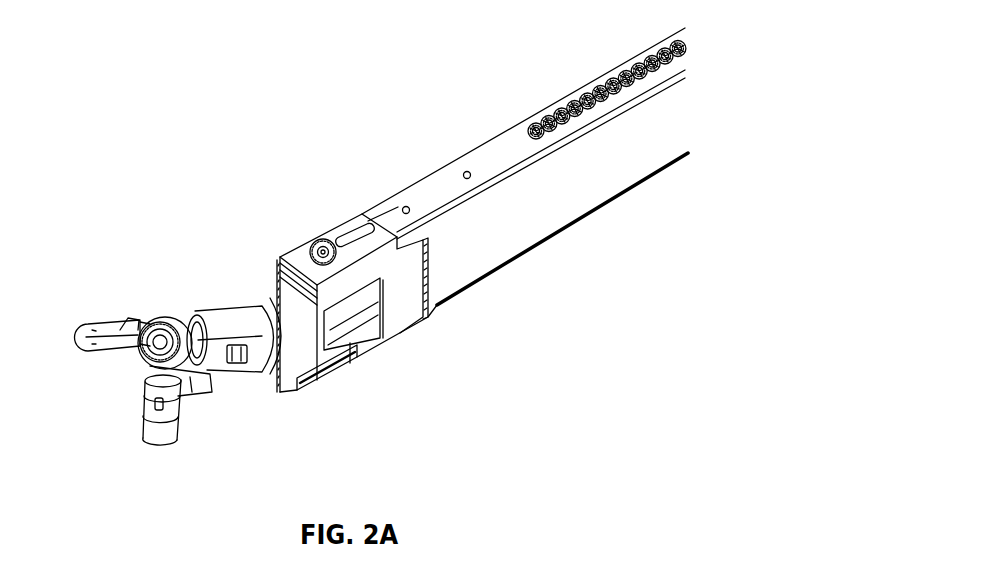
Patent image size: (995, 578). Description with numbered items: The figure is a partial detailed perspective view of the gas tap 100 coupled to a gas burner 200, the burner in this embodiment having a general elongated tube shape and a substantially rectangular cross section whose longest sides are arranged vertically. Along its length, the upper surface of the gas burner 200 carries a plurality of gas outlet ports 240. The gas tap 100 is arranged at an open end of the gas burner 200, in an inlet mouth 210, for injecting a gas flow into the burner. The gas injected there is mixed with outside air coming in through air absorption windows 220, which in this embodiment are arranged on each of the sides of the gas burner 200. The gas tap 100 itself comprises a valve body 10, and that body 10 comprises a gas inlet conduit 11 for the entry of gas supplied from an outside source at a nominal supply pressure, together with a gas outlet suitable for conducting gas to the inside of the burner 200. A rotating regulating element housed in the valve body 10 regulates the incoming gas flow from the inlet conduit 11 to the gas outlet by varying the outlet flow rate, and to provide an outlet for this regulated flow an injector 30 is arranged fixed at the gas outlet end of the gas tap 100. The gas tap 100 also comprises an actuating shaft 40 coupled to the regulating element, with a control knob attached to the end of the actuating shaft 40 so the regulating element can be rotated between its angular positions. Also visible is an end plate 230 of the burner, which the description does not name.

The gas tap 100 is at (132, 246).
The valve body 10 is at (262, 355).
The gas inlet conduit 11 is at (150, 417).
The injector 30 is at (281, 254).
The actuating shaft 40 is at (97, 338).
The gas burner 200 is at (432, 134).
The inlet mouth 210 is at (350, 360).
The air absorption windows 220 is at (367, 313).
The plate 230 is at (412, 295).
The gas outlet ports 240 is at (549, 122).